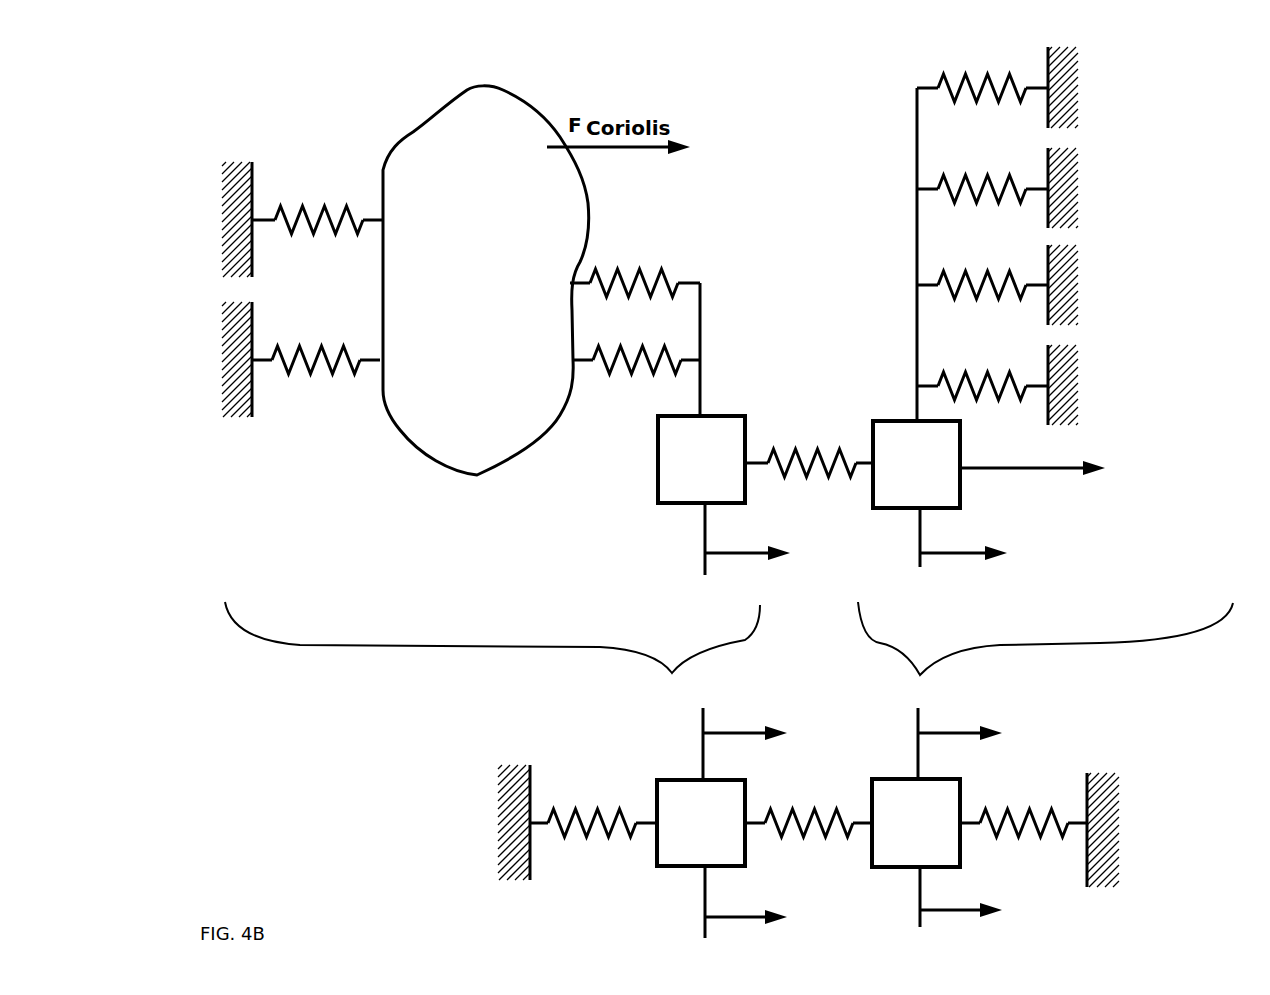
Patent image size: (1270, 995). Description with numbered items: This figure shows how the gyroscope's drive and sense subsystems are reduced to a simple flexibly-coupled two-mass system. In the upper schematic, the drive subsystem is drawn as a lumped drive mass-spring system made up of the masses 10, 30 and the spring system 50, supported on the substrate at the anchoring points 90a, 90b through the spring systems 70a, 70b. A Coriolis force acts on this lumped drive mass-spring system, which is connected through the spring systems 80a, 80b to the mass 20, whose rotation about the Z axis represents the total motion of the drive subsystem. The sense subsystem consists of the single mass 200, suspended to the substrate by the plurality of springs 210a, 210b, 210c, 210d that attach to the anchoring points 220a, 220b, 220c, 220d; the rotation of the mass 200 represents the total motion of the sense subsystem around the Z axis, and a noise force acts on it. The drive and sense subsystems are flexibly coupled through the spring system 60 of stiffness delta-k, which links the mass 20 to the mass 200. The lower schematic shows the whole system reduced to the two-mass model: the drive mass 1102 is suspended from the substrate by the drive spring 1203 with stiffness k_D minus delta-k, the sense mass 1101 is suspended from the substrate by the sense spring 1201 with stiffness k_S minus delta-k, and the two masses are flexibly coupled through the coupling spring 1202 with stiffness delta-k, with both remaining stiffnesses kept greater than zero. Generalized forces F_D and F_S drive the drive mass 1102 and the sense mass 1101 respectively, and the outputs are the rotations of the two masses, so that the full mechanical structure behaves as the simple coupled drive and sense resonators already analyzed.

The anchoring point 90a is at (230, 200).
The anchoring point 90b is at (233, 390).
The spring system 70a is at (322, 190).
The spring system 70b is at (312, 390).
The spring system 50 is at (486, 280).
The mass 30 is at (486, 280).
The mass 10 is at (486, 280).
The spring system 80a is at (632, 252).
The spring system 80b is at (630, 390).
The mass 20 is at (723, 430).
The spring system 60 is at (837, 483).
The mass 200 is at (943, 488).
The spring 210a is at (965, 88).
The spring 210b is at (967, 187).
The spring 210c is at (970, 283).
The spring 210d is at (977, 383).
The anchoring point 220a is at (1065, 90).
The anchoring point 220b is at (1065, 180).
The anchoring point 220c is at (1068, 277).
The anchoring point 220d is at (1068, 377).
The drive mass 1102 is at (657, 780).
The sense mass 1101 is at (872, 780).
The drive spring 1203 is at (598, 840).
The coupling spring 1202 is at (823, 840).
The sense spring 1201 is at (1008, 840).